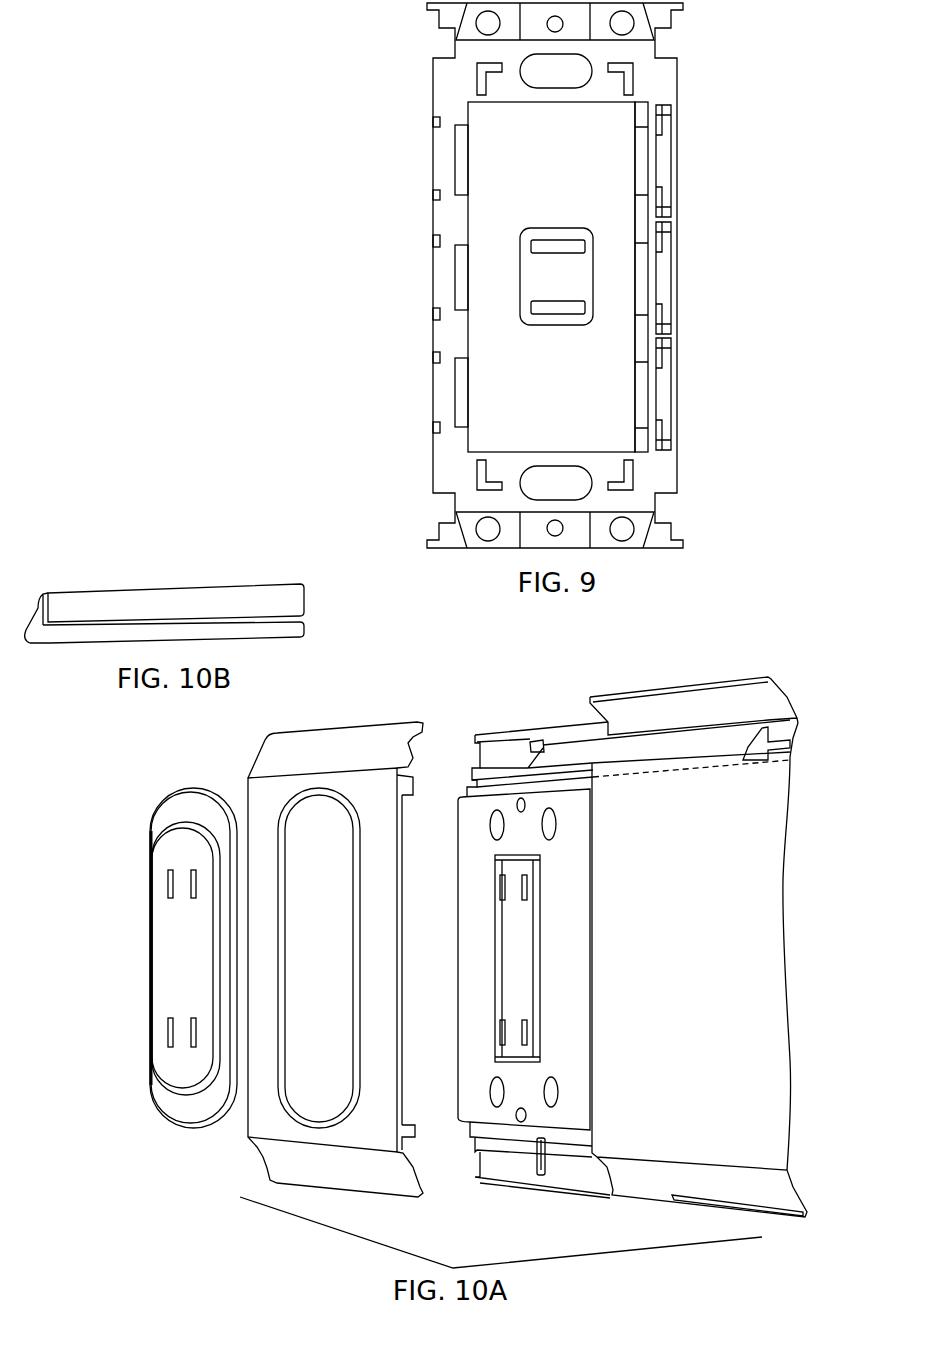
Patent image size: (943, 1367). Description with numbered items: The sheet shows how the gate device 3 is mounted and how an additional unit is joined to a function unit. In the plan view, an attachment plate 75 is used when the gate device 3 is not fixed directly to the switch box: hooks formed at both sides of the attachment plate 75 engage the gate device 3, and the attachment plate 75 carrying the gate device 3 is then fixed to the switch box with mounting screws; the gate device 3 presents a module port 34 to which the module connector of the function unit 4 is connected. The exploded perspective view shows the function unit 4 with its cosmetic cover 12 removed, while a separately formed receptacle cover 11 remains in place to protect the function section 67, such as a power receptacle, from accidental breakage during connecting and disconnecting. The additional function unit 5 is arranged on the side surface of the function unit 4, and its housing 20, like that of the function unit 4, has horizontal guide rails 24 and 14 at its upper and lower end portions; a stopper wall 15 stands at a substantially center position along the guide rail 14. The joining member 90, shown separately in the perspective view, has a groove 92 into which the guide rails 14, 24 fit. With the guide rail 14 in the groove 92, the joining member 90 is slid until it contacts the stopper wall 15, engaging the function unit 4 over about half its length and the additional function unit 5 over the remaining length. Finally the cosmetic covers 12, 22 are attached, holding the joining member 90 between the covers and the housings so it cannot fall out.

In FIG. 9, the gate device 3 is at (510, 343).
In FIG. 9, the module port 34 is at (519, 277).
In FIG. 9, the attachment plate 75 is at (450, 225).
In FIG. 10B, the joining member 90 is at (202, 600).
In FIG. 10A, the joining member 90 is at (590, 748).
In FIG. 10B, the groove 92 is at (117, 625).
In FIG. 10A, the receptacle cover 11 is at (167, 967).
In FIG. 10A, the cosmetic cover 12 is at (272, 805).
In FIG. 10A, the function unit 4 is at (470, 1025).
In FIG. 10A, the additional function unit 5 is at (683, 935).
In FIG. 10A, the guide rail 14 is at (510, 770).
In FIG. 10A, the stopper wall 15 is at (537, 742).
In FIG. 10A, the housing 20 is at (777, 728).
In FIG. 10A, the guide rail 24 is at (793, 718).
In FIG. 10A, the cosmetic cover 22 is at (670, 1120).
In FIG. 10A, the function section 67 is at (515, 935).